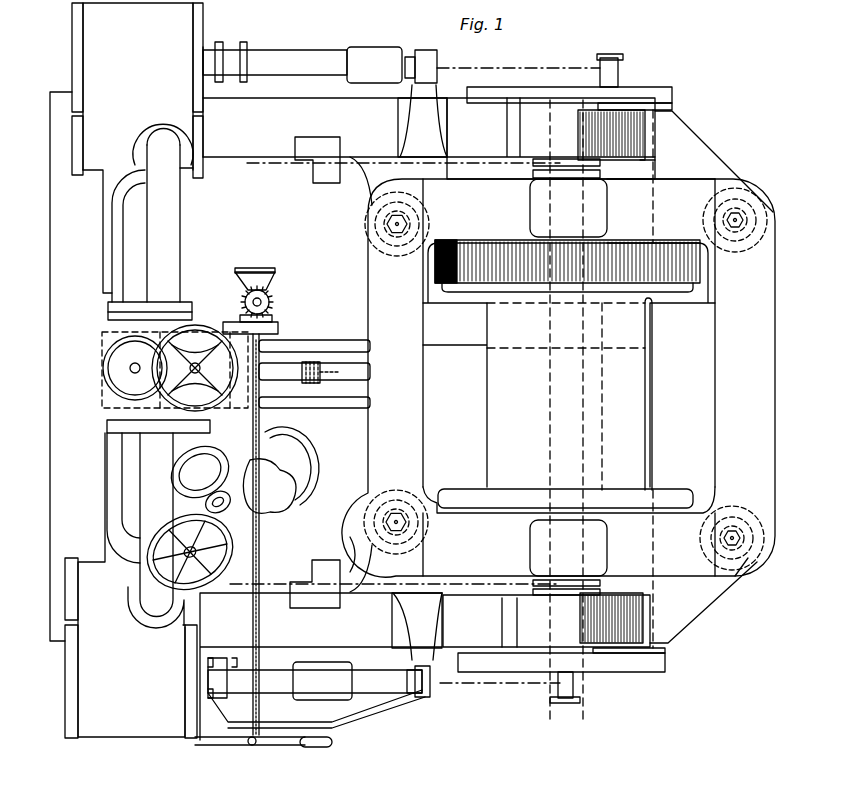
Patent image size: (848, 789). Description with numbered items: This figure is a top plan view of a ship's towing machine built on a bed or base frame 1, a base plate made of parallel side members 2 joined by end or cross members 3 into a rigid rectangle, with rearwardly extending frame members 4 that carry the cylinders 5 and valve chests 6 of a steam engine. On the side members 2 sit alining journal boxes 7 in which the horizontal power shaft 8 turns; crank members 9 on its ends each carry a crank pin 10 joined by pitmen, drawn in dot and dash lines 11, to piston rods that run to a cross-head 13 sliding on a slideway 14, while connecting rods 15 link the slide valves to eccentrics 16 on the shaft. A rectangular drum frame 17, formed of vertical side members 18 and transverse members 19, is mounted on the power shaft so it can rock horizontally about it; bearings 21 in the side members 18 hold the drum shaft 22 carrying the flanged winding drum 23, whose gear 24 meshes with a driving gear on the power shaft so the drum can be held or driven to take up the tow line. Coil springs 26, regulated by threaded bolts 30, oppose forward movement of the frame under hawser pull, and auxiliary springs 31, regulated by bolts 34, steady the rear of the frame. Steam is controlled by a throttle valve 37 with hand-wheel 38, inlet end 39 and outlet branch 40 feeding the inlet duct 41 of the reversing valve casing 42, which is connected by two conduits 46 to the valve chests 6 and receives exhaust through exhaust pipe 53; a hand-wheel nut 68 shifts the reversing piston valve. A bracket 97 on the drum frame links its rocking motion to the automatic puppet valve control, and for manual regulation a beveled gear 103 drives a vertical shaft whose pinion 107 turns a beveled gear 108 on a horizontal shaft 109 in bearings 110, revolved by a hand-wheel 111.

The bed or base frame 1 is at (558, 378).
The side members 2 is at (660, 115).
The end or cross members 3 is at (372, 180).
The rearwardly extending frame members 4 is at (275, 110).
The cylinders 5 is at (98, 43).
The valve chests 6 is at (110, 160).
The bearings or journal boxes 7 is at (525, 130).
The power shaft 8 is at (586, 650).
The crank members 9 is at (640, 95).
The crank pin 10 is at (612, 57).
The pitmen 11 is at (545, 74).
The cross-head 13 is at (375, 62).
The slideway 14 is at (280, 60).
The connecting rods 15 is at (302, 160).
The eccentrics 16 is at (592, 166).
The rectangular frame 17 is at (442, 490).
The side members 18 is at (670, 192).
The transverse parallel members 19 is at (412, 408).
The bearings 21 is at (598, 212).
The drum shaft 22 is at (552, 435).
The flanged winding drum 23 is at (650, 458).
The gear 24 is at (700, 290).
The coil springs 26 is at (745, 560).
The threaded bolt 30 is at (738, 262).
The springs 31 is at (370, 238).
The bolt 34 is at (393, 262).
The throttle valve 37 is at (278, 487).
The hand-wheel 38 is at (215, 580).
The inlet end 39 is at (298, 454).
The outlet branch 40 is at (197, 480).
The inlet duct 41 is at (192, 436).
The casing 42 is at (112, 325).
The conduits 46 is at (116, 262).
The exhaust pipe 53 is at (172, 232).
The hand-wheel nut 68 is at (197, 328).
The bracket or extension 97 is at (340, 385).
The beveled gear 103 is at (258, 280).
The pinion 107 is at (268, 296).
The beveled gear 108 is at (272, 318).
The shaft 109 is at (262, 546).
The bearings 110 is at (282, 330).
The hand-wheel 111 is at (286, 750).